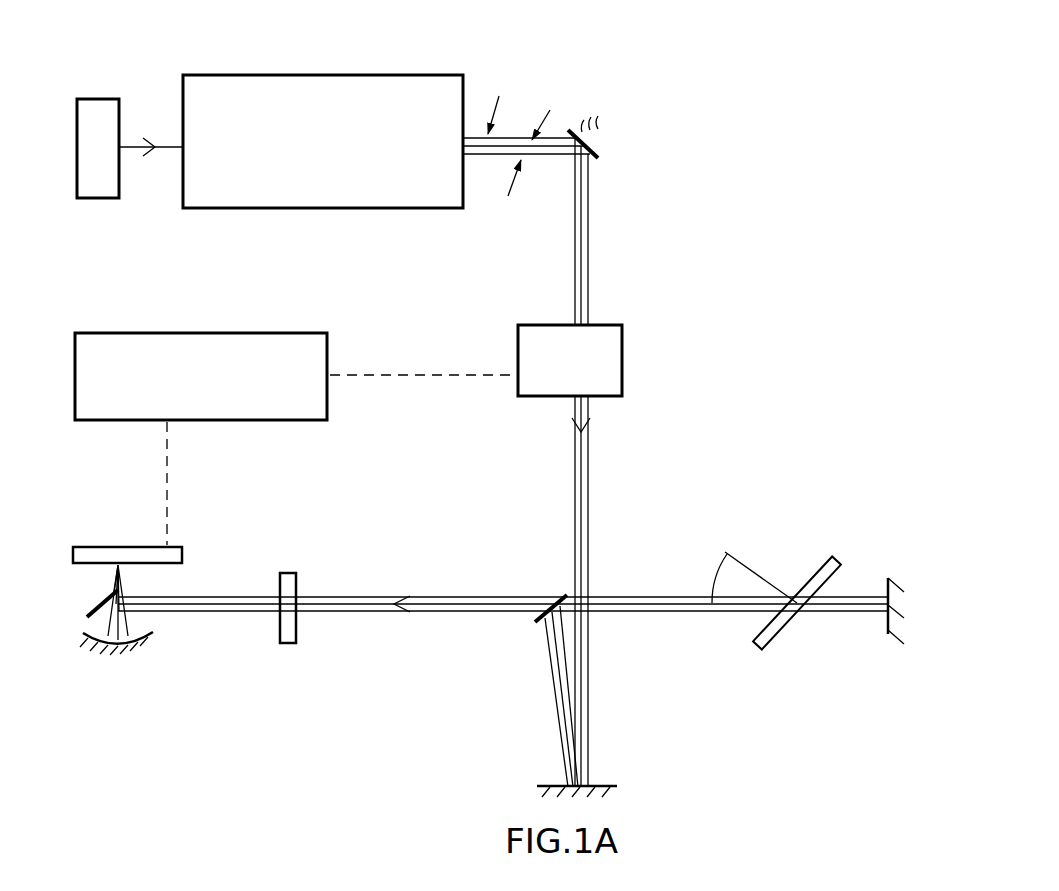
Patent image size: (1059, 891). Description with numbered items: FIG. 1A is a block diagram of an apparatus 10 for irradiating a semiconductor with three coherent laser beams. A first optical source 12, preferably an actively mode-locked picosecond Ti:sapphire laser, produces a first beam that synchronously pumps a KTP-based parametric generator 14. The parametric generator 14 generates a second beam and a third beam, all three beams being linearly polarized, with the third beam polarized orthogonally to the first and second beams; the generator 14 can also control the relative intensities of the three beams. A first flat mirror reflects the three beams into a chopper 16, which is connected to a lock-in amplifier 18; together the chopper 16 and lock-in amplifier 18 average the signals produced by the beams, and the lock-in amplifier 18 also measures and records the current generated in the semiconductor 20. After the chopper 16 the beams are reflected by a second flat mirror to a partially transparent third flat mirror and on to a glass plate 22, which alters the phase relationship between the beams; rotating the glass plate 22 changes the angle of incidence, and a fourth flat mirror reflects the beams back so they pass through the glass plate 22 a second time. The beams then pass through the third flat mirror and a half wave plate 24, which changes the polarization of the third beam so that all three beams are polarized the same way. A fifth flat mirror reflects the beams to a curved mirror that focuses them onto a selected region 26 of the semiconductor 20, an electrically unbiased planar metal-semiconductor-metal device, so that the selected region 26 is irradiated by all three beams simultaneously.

The apparatus 10 is at (746, 79).
The first optical source 12 is at (98, 99).
The parametric generator 14 is at (318, 123).
The chopper 16 is at (632, 360).
The lock-in amplifier 18 is at (197, 362).
The semiconductor 20 is at (192, 546).
The glass plate 22 is at (789, 581).
The half wave plate 24 is at (268, 639).
The selected region 26 is at (127, 568).